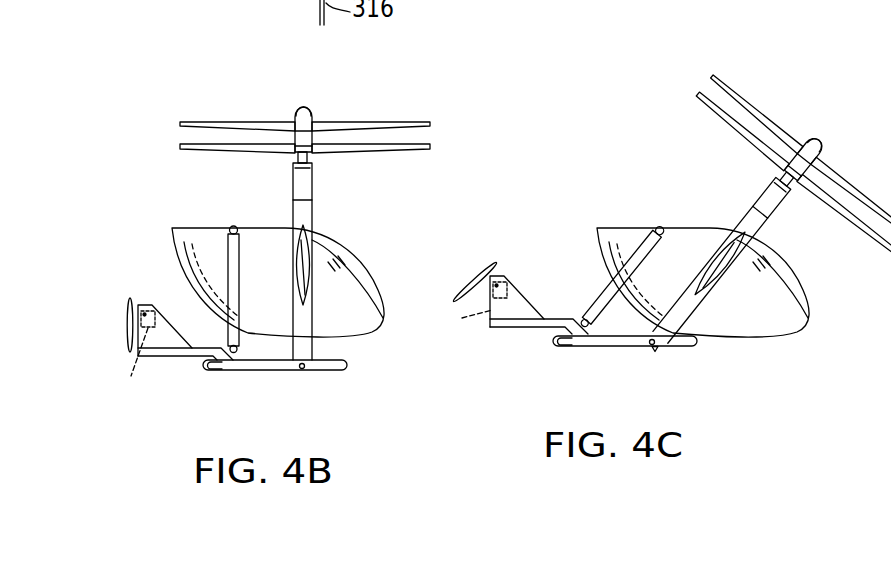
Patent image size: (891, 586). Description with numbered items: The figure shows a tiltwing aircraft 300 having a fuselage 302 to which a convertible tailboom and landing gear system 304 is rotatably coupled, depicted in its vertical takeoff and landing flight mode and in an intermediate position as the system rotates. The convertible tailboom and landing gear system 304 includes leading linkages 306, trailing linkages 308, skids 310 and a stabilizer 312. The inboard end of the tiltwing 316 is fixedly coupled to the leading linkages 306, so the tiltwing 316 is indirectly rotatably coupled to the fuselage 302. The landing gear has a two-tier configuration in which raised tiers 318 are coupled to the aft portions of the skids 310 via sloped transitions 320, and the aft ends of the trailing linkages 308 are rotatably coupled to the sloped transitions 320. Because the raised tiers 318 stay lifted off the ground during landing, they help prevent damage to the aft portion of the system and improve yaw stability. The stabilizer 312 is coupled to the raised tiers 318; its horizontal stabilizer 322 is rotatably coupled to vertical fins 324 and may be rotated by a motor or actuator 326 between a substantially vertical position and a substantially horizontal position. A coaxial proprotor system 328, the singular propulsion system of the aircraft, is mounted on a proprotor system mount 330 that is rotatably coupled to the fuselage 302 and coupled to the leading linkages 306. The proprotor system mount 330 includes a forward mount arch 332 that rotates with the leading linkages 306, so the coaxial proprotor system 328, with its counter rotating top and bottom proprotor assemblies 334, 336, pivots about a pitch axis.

In FIG. 4B, the tiltwing aircraft 300 is at (235, 255).
In FIG. 4C, the tiltwing aircraft 300 is at (653, 230).
In FIG. 4B, the fuselage 302 is at (192, 228).
In FIG. 4C, the fuselage 302 is at (615, 226).
In FIG. 4B, the convertible tailboom and landing gear system 304 is at (280, 403).
In FIG. 4C, the convertible tailboom and landing gear system 304 is at (631, 377).
In FIG. 4B, the leading linkages 306 is at (305, 213).
In FIG. 4C, the leading linkages 306 is at (772, 219).
In FIG. 4B, the trailing linkages 308 is at (226, 250).
In FIG. 4C, the trailing linkages 308 is at (600, 298).
In FIG. 4B, the skids 310 is at (285, 372).
In FIG. 4C, the skids 310 is at (638, 347).
In FIG. 4B, the stabilizer 312 is at (116, 328).
In FIG. 4C, the stabilizer 312 is at (488, 258).
In FIG. 4B, the tiltwing 316 is at (308, 284).
In FIG. 4C, the tiltwing 316 is at (716, 278).
In FIG. 4B, the raised tiers 318 is at (173, 358).
In FIG. 4C, the raised tiers 318 is at (520, 328).
In FIG. 4B, the sloped transitions 320 is at (226, 371).
In FIG. 4C, the sloped transitions 320 is at (573, 347).
In FIG. 4B, the horizontal stabilizer 322 is at (127, 333).
In FIG. 4C, the horizontal stabilizer 322 is at (491, 284).
In FIG. 4B, the vertical fins 324 is at (153, 308).
In FIG. 4C, the vertical fins 324 is at (496, 281).
In FIG. 4B, the motor or actuator 326 is at (131, 370).
In FIG. 4C, the motor or actuator 326 is at (454, 322).
In FIG. 4B, the coaxial proprotor system 328 is at (305, 109).
In FIG. 4C, the coaxial proprotor system 328 is at (792, 159).
In FIG. 4B, the proprotor system mount 330 is at (313, 206).
In FIG. 4C, the proprotor system mount 330 is at (740, 230).
In FIG. 4B, the forward mount arch 332 is at (313, 183).
In FIG. 4C, the forward mount arch 332 is at (781, 195).
In FIG. 4B, the top proprotor assembly 334 is at (294, 112).
In FIG. 4C, the top proprotor assembly 334 is at (806, 148).
In FIG. 4B, the bottom proprotor assembly 336 is at (296, 158).
In FIG. 4C, the bottom proprotor assembly 336 is at (788, 173).